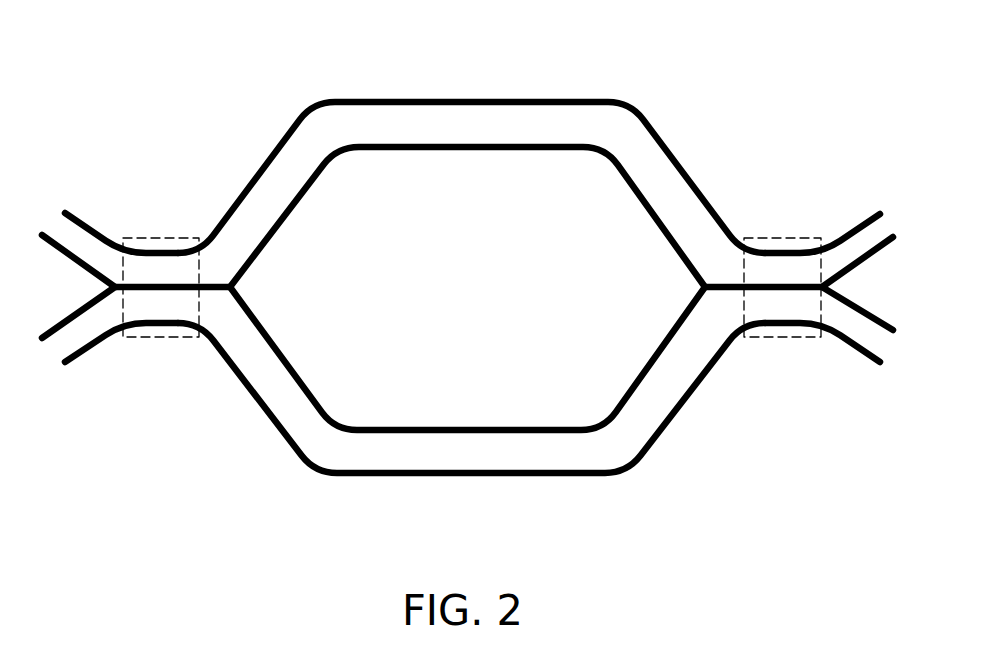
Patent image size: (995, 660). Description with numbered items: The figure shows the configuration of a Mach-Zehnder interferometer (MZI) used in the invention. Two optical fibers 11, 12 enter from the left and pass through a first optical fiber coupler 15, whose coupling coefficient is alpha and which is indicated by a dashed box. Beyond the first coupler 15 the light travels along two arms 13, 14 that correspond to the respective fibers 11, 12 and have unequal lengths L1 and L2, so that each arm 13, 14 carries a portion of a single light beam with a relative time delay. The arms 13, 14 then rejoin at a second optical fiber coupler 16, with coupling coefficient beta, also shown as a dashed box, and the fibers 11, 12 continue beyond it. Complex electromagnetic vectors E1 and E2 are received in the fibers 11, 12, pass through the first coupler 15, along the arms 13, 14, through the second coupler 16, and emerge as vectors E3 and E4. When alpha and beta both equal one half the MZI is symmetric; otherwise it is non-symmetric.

The fiber 11 is at (78, 240).
The fiber 12 is at (73, 338).
The arm 13 is at (536, 69).
The arm 14 is at (518, 496).
The first 3 dB optical fiber coupler 15 is at (158, 333).
The second 3 dB optical fiber coupler 16 is at (795, 340).